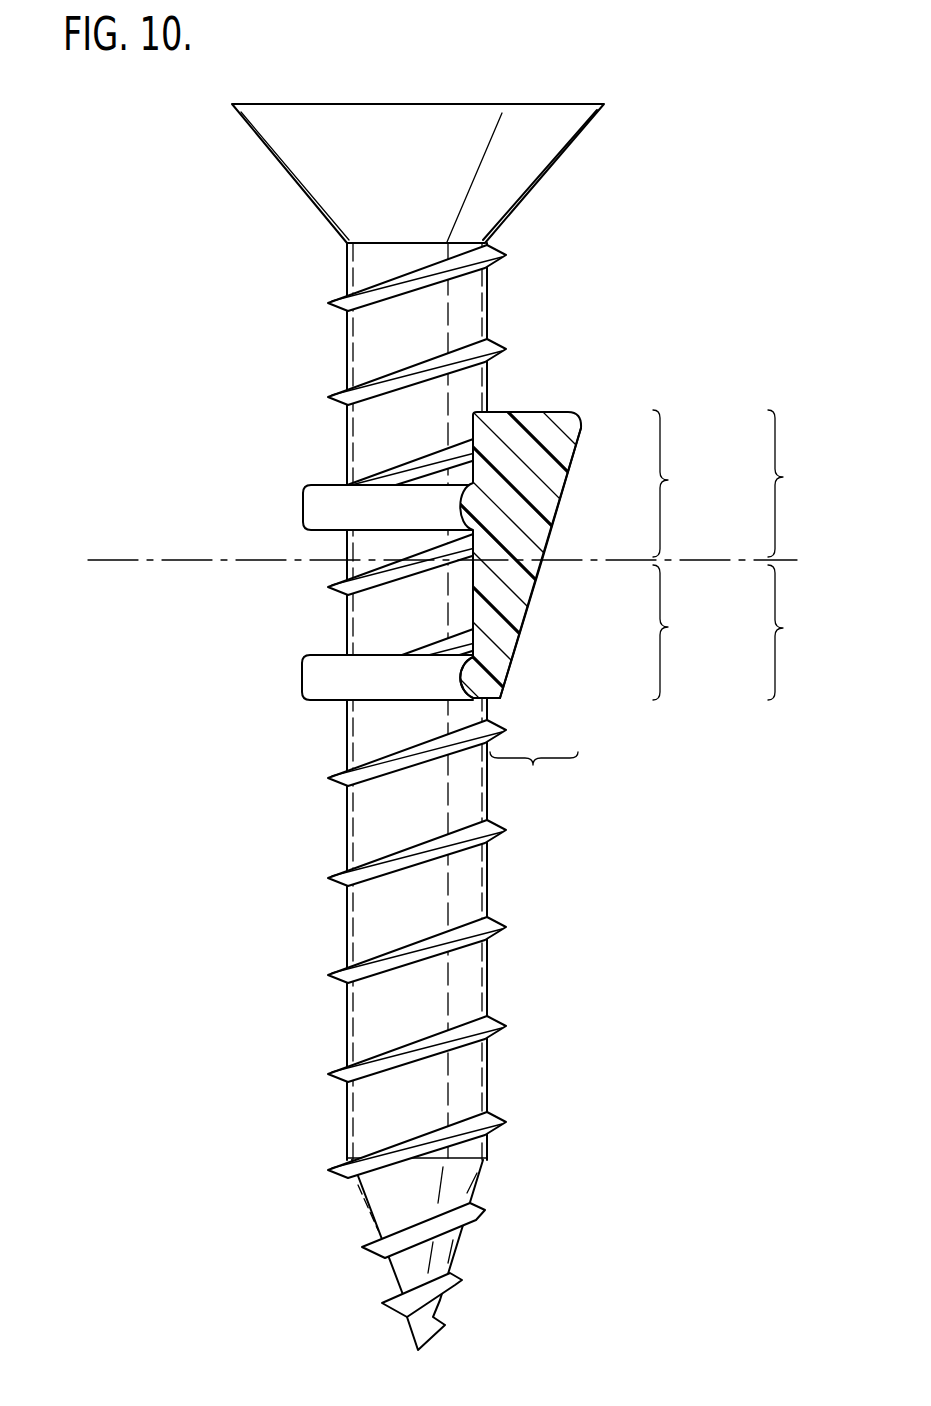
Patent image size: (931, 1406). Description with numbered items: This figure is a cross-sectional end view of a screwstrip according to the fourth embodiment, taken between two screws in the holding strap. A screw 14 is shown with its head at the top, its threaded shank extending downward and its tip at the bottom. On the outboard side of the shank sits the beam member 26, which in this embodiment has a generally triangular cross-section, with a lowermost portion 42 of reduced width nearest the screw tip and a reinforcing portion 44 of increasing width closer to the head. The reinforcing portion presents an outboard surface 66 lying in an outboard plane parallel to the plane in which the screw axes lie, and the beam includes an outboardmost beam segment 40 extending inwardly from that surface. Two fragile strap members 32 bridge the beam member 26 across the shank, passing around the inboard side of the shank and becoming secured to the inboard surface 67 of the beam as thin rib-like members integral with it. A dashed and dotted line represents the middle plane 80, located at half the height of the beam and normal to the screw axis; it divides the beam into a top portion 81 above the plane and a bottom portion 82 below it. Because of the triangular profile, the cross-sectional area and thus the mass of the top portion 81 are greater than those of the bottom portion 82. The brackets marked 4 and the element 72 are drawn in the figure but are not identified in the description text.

The screw 14 is at (405, 727).
The beam member 26 is at (528, 576).
The strap member 32 is at (304, 510).
The outboardmost beam segment 40 is at (534, 781).
The lowermost portion 42 is at (507, 643).
The reinforcing central portion 44 is at (557, 484).
The outboard surface 66 is at (536, 592).
The inboard surface 67 is at (485, 598).
The thread turn 72 is at (487, 622).
The middle plane 80 is at (110, 560).
The top portion 81 is at (796, 483).
The bottom portion 82 is at (796, 632).
The height dimension 4 is at (671, 555).